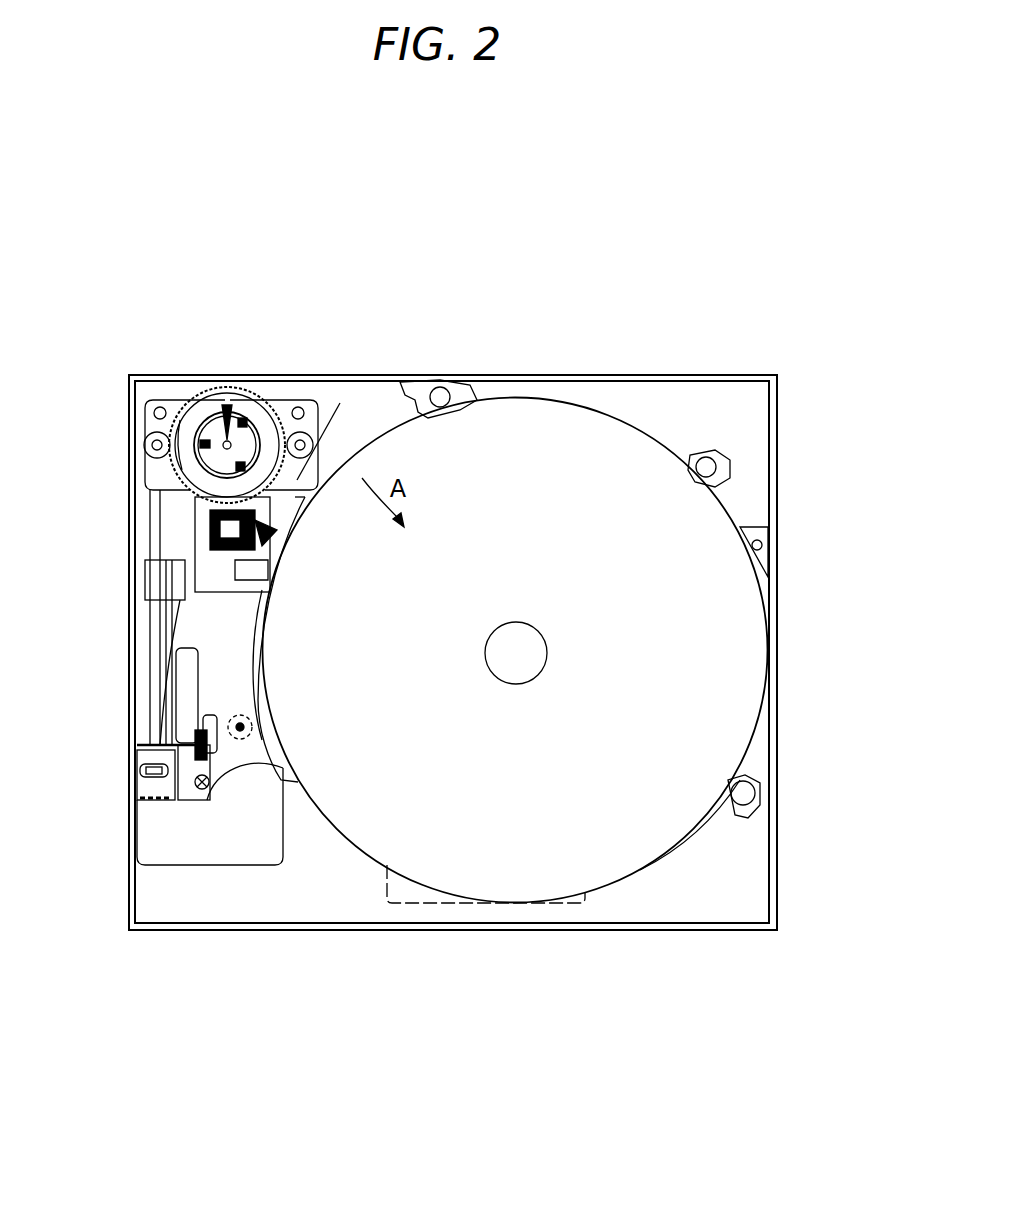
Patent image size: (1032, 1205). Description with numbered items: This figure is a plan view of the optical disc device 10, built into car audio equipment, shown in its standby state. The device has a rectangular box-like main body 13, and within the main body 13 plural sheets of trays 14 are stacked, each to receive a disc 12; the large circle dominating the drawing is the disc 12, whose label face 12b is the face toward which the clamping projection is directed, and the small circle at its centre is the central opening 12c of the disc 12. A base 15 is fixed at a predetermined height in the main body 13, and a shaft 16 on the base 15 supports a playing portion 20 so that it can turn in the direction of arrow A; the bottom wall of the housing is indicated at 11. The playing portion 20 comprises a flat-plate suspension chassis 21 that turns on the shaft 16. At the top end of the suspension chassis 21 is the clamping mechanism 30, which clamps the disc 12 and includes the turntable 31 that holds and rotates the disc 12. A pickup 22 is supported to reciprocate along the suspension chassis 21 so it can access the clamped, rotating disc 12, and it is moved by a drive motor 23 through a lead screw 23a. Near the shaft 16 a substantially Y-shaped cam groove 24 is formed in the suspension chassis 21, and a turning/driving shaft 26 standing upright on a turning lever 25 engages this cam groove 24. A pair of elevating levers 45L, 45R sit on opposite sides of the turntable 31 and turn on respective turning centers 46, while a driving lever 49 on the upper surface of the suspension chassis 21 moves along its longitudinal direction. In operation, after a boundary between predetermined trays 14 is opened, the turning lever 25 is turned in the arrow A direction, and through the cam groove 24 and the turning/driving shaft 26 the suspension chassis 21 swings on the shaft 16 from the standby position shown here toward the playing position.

The optical disc device 10 is at (749, 348).
The base 11 is at (483, 932).
The disc 12 is at (768, 655).
The label face 12b is at (698, 834).
The center hole 12c is at (516, 622).
The main body 13 is at (790, 459).
The trays 14 is at (754, 791).
The base 15 is at (257, 870).
The shaft 16 is at (203, 800).
The playing portion 20 is at (265, 636).
The suspension chassis 21 is at (248, 680).
The pickup 22 is at (278, 563).
The drive motor 23 is at (140, 790).
The lead screw 23a is at (158, 604).
The cam groove 24 is at (228, 755).
The turning lever 25 is at (246, 727).
The turning/driving shaft 26 is at (140, 758).
The clamping mechanism 30 is at (228, 436).
The turntable 31 is at (198, 410).
The elevating lever 45L is at (152, 440).
The elevating lever 45R is at (302, 442).
The turning center 46 is at (146, 445).
The driving lever 49 is at (165, 628).